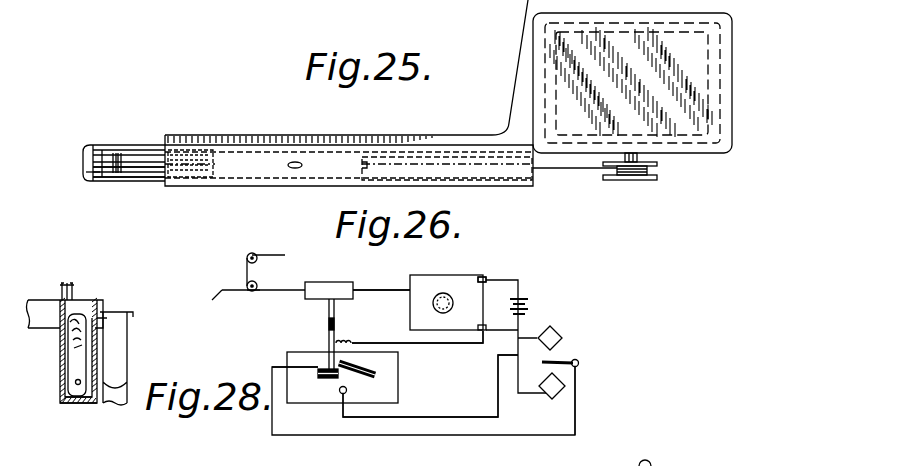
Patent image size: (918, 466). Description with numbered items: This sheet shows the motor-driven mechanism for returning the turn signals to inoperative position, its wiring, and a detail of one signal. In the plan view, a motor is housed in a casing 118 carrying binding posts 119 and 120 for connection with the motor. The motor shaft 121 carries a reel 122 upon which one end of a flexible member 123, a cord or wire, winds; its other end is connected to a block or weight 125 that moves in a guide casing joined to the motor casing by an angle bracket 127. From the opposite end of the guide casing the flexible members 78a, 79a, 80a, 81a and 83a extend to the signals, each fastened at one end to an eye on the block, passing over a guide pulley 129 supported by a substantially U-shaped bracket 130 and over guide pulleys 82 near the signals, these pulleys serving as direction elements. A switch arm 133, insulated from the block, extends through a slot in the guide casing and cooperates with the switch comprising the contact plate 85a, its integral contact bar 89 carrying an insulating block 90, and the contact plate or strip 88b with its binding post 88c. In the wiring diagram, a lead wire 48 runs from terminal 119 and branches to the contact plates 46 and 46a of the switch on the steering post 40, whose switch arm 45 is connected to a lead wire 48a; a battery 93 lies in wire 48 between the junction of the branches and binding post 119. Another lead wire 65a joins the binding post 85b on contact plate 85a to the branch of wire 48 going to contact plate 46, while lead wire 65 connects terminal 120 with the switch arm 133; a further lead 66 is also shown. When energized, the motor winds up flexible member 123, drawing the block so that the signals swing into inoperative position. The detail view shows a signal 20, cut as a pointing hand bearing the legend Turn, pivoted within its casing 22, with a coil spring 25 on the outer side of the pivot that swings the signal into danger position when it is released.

In FIG. 25, the motor casing 118 is at (737, 21).
In FIG. 26, the motor casing 118 is at (476, 268).
In FIG. 25, the angle bracket 127 is at (507, 121).
In FIG. 25, the guide pulley 129 is at (103, 148).
In FIG. 26, the guide pulley 129 is at (253, 291).
In FIG. 25, the flexible member 80a is at (155, 153).
In FIG. 25, the flexible member 81a is at (153, 157).
In FIG. 25, the U-shaped bracket 130 is at (87, 178).
In FIG. 25, the flexible member 79a is at (143, 168).
In FIG. 25, the flexible member 78a is at (157, 175).
In FIG. 26, the flexible member 78a is at (273, 255).
In FIG. 25, the motor shaft 121 is at (657, 163).
In FIG. 25, the reel 122 is at (640, 181).
In FIG. 26, the guide pulley 82 is at (248, 257).
In FIG. 26, the flexible member 83a is at (206, 305).
In FIG. 26, the block or weight 125 is at (340, 272).
In FIG. 26, the flexible member 123 is at (383, 289).
In FIG. 26, the binding post 119 is at (489, 277).
In FIG. 26, the lead wire 48 is at (525, 297).
In FIG. 26, the battery 93 is at (530, 303).
In FIG. 26, the binding post 120 is at (527, 316).
In FIG. 26, the contact plate 46a is at (563, 338).
In FIG. 26, the switch arm 45 is at (566, 361).
In FIG. 26, the steering post 40 is at (580, 364).
In FIG. 26, the contact plate 46 is at (559, 391).
In FIG. 26, the lead wire 48a is at (578, 402).
In FIG. 26, the lead wire 65 is at (443, 345).
In FIG. 26, the lead wire 65a is at (458, 413).
In FIG. 26, the switch arm 133 is at (343, 337).
In FIG. 26, the contact plate or strip 88b is at (323, 367).
In FIG. 26, the binding post 88c is at (317, 368).
In FIG. 26, the binding post 85b is at (326, 379).
In FIG. 26, the contact plate 85a is at (318, 404).
In FIG. 26, the insulating block or plate 90 is at (360, 372).
In FIG. 26, the contact bar 89 is at (357, 376).
In FIG. 26, the lead 66 is at (655, 462).
In FIG. 28, the signal 20 is at (72, 313).
In FIG. 28, the casing 22 is at (60, 354).
In FIG. 28, the coil spring 25 is at (63, 394).